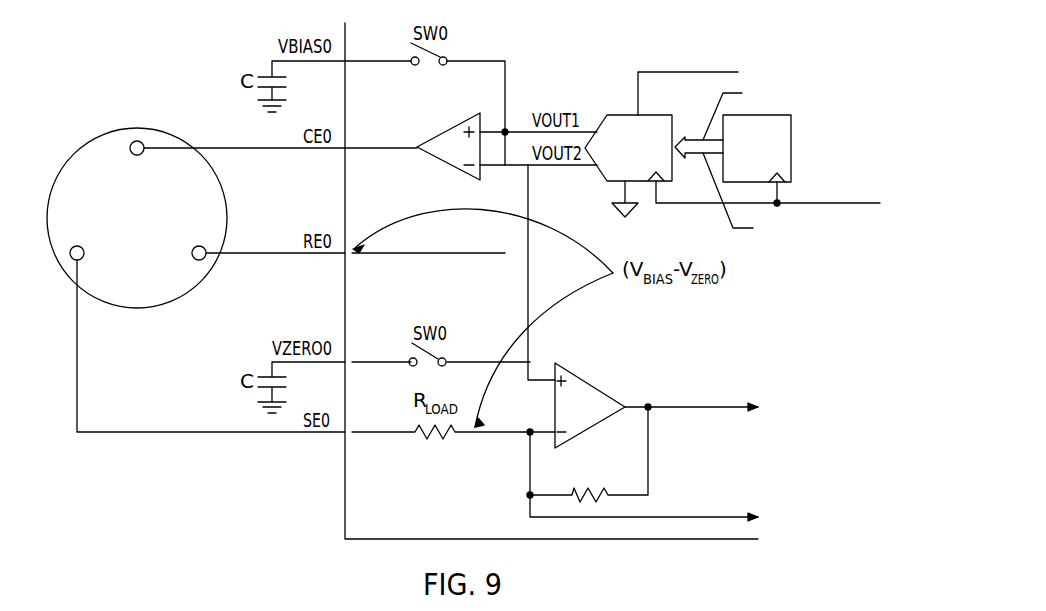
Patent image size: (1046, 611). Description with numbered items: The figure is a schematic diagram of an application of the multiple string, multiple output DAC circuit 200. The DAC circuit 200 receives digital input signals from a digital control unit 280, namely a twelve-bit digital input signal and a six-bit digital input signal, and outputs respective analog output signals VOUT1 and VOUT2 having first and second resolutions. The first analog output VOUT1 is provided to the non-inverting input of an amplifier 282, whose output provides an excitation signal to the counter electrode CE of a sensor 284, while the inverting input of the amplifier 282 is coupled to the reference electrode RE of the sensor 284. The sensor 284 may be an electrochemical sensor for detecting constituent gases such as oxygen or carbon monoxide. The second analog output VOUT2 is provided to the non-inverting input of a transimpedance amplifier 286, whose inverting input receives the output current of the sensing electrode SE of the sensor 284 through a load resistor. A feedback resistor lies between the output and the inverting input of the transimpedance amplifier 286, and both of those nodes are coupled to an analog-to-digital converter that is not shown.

The sensor 284 is at (137, 127).
The amplifier 282 is at (450, 129).
The multiple string, multiple output DAC circuit 200 is at (649, 114).
The digital control unit 280 is at (791, 146).
The transimpedance amplifier 286 is at (590, 382).